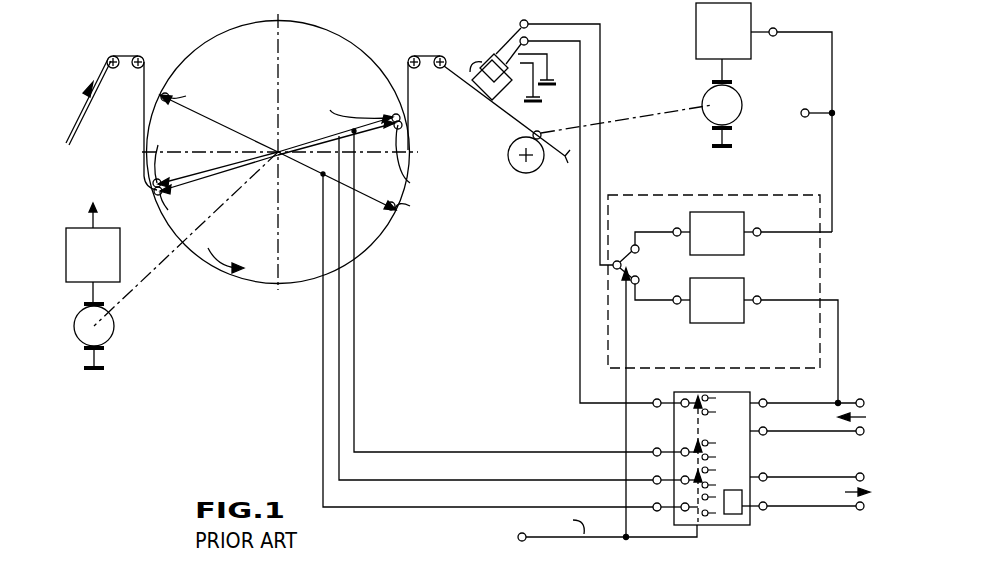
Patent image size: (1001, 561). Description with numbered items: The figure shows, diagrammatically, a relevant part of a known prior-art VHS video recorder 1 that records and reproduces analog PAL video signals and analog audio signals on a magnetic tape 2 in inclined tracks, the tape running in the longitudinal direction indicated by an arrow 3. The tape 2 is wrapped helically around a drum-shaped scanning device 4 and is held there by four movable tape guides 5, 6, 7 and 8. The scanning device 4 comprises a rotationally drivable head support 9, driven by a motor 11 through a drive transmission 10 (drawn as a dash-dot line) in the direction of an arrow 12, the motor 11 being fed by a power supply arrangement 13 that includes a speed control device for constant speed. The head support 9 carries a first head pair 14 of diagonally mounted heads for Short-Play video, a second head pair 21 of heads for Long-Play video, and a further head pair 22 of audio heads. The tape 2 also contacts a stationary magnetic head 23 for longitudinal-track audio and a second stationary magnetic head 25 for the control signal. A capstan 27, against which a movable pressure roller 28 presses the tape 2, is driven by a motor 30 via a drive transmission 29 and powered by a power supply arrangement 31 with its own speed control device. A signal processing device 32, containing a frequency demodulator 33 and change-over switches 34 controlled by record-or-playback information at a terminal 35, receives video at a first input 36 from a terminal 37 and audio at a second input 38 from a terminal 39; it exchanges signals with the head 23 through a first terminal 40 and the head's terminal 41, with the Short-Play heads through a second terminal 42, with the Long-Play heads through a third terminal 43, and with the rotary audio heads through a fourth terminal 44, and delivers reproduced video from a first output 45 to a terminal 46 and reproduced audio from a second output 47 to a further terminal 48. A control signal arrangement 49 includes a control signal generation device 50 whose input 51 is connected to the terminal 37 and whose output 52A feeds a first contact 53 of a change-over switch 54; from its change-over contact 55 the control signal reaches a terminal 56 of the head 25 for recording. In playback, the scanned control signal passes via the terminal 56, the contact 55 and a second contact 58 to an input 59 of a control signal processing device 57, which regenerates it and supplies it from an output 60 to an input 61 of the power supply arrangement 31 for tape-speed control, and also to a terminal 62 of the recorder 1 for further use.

The video recorder 1 is at (232, 385).
The magnetic tape 2 is at (92, 98).
The arrow 3 is at (75, 110).
The drum-shaped scanning device 4 is at (190, 52).
The movable tape guide 5 is at (111, 56).
The movable tape guide 6 is at (139, 56).
The movable tape guide 7 is at (414, 56).
The movable tape guide 8 is at (440, 56).
The rotationally drivable head support 9 is at (302, 30).
The drive transmission 10 is at (163, 268).
The motor 11 is at (110, 334).
The arrow 12 is at (218, 270).
The power supply arrangement 13 is at (112, 272).
The first head pair 14 is at (150, 183).
The second head pair 21 is at (150, 197).
The further head pair 22 is at (400, 214).
The stationary magnetic head 23 is at (488, 90).
The second stationary magnetic head 25 is at (472, 72).
The capstan 27 is at (540, 131).
The movable pressure roller 28 is at (508, 151).
The drive transmission 29 is at (660, 110).
The motor 30 is at (710, 97).
The power supply arrangement 31 is at (696, 20).
The signal processing device 32 is at (758, 516).
The frequency demodulator 33 is at (728, 505).
The change-over switches 34 is at (750, 429).
The terminal 35 is at (518, 534).
The first input 36 is at (764, 399).
The terminal 37 is at (860, 399).
The second input 38 is at (764, 435).
The terminal 39 is at (858, 435).
The first terminal 40 is at (657, 398).
The terminal 41 is at (520, 40).
The second terminal 42 is at (657, 447).
The third terminal 43 is at (657, 475).
The fourth terminal 44 is at (657, 502).
The first output 45 is at (764, 473).
The terminal 46 is at (858, 473).
The second output 47 is at (764, 502).
The further terminal 48 is at (860, 510).
The control signal arrangement 49 is at (755, 190).
The control signal generation device 50 is at (720, 320).
The input 51 is at (760, 304).
The output 52A is at (676, 305).
The first contact 53 is at (640, 281).
The change-over switch 54 is at (610, 258).
The change-over contact 55 is at (622, 276).
The terminal 56 is at (524, 20).
The control signal processing device 57 is at (735, 250).
The second contact 58 is at (640, 250).
The input 59 is at (676, 228).
The output 60 is at (760, 229).
The input 61 is at (775, 28).
The terminal 62 is at (805, 109).